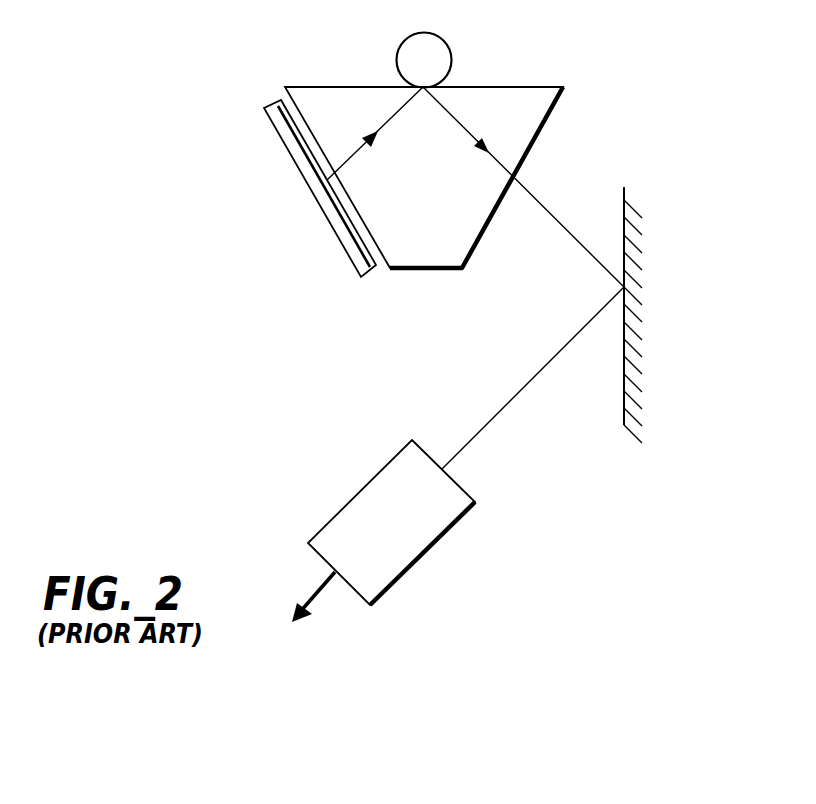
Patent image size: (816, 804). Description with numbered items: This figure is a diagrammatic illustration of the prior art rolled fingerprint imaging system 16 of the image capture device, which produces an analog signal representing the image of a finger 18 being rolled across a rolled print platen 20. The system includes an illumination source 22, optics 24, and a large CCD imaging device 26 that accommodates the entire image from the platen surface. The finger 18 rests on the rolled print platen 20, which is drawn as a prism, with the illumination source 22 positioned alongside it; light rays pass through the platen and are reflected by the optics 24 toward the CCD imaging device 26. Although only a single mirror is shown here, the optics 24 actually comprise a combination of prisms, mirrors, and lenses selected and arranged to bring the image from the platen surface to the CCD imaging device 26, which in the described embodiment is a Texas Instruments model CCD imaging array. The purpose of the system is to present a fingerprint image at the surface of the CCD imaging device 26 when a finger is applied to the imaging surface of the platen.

The rolled fingerprint imaging system 16 is at (222, 196).
The finger 18 is at (428, 34).
The rolled print platen 20 is at (528, 84).
The illumination source 22 is at (345, 250).
The optics 24 is at (623, 202).
The CCD imaging device 26 is at (357, 495).